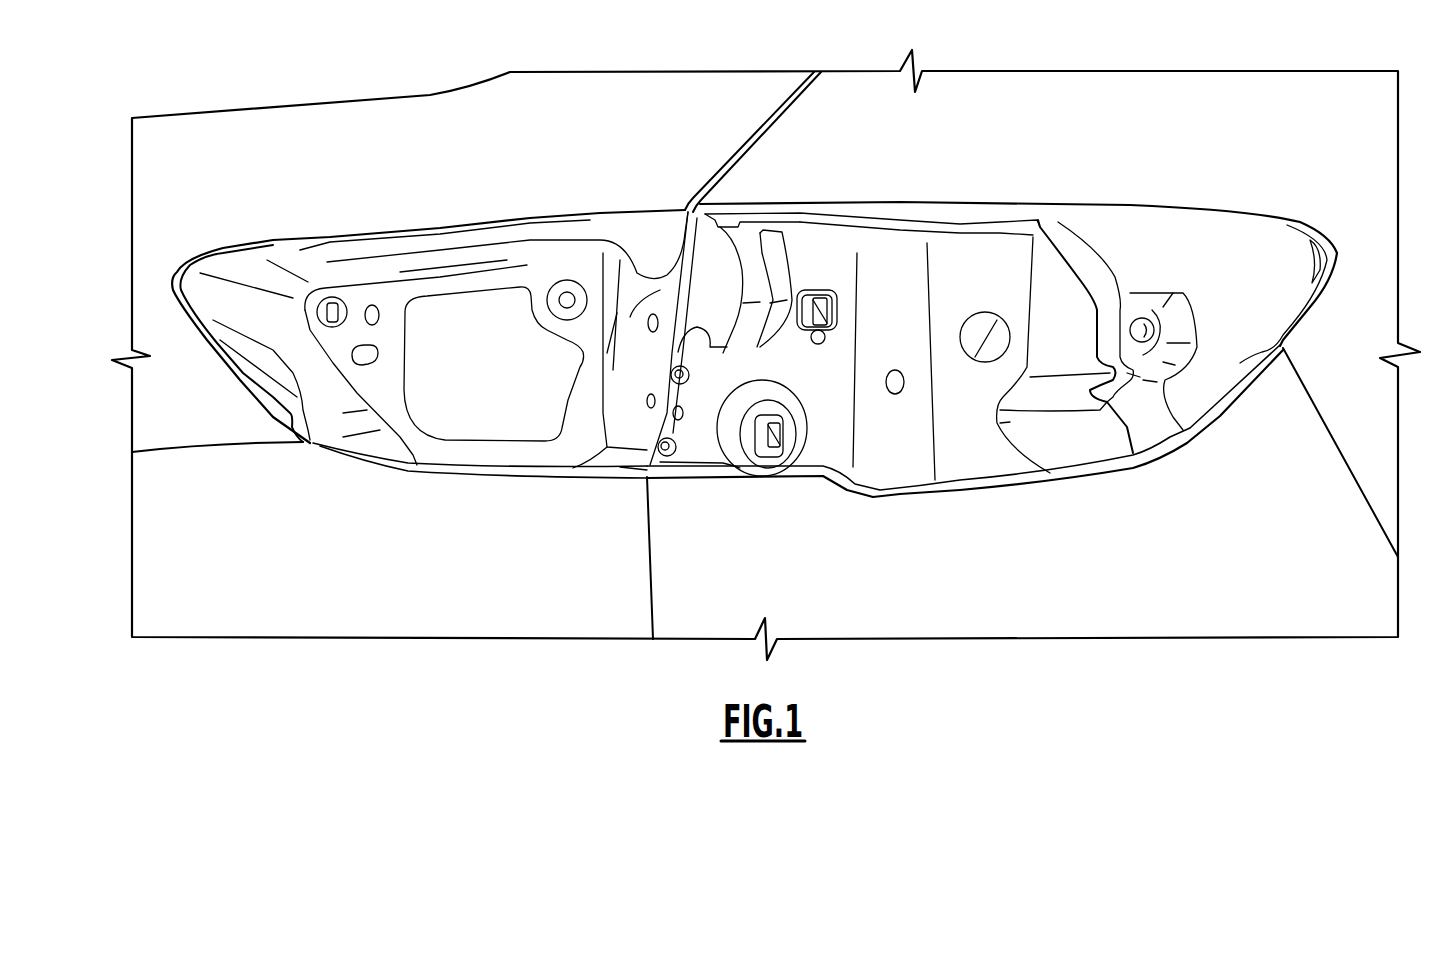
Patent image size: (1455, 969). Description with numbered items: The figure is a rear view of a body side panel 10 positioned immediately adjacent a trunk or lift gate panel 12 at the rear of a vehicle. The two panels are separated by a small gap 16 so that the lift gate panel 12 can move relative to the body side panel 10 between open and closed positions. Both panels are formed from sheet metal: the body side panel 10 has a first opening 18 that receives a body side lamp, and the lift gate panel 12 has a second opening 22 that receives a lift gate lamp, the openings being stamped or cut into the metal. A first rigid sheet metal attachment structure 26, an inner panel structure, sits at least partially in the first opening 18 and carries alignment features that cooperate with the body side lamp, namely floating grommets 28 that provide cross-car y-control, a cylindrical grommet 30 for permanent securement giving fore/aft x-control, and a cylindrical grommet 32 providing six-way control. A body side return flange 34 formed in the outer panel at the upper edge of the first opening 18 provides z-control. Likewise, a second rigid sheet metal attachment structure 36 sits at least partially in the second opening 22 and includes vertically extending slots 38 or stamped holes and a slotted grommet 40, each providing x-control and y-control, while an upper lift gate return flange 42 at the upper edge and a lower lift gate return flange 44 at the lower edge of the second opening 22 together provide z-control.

The body side panel 10 is at (1382, 433).
The lift gate panel 12 is at (146, 381).
The gap 16 is at (818, 72).
The first opening 18 is at (1000, 478).
The second opening 22 is at (620, 467).
The first rigid sheet metal attachment structure 26 is at (920, 451).
The floating grommet 28 is at (812, 290).
The cylindrical grommet 30 is at (683, 388).
The cylindrical grommet 32 is at (1145, 308).
The body side return flange 34 is at (820, 210).
The second rigid sheet metal attachment structure 36 is at (647, 450).
The vertically extending slots 38 is at (643, 323).
The slotted grommet 40 is at (315, 287).
The upper lift gate return flange 42 is at (438, 230).
The lower lift gate return flange 44 is at (408, 470).